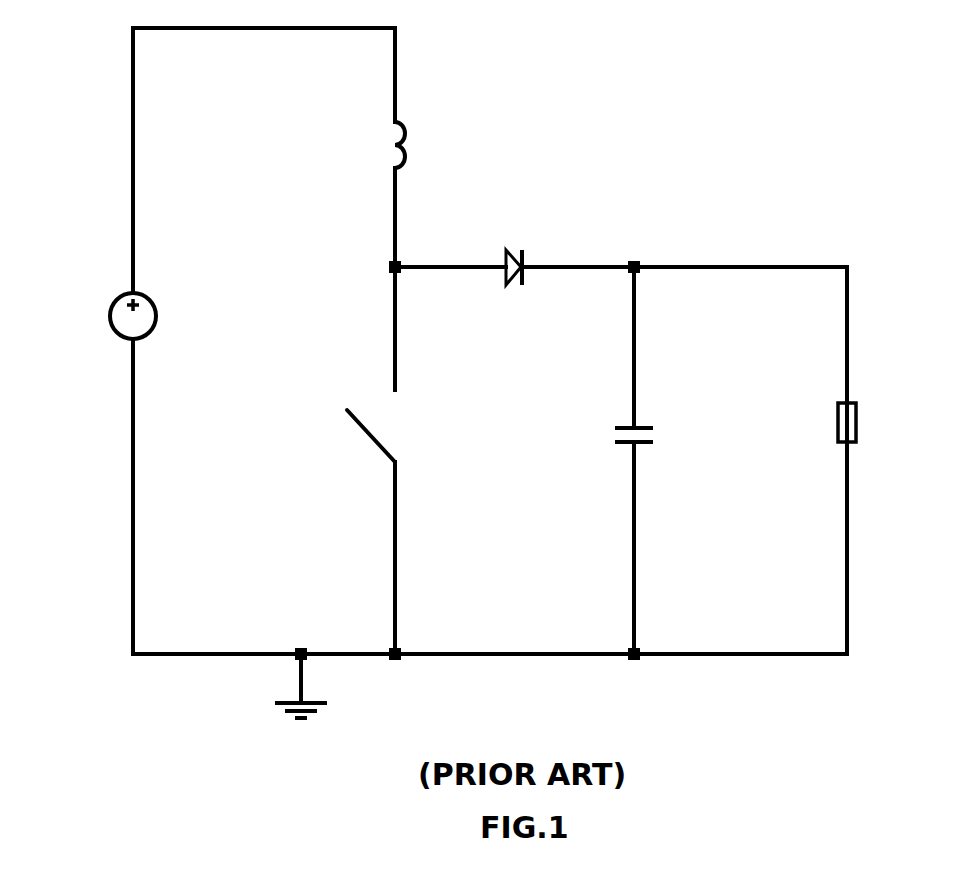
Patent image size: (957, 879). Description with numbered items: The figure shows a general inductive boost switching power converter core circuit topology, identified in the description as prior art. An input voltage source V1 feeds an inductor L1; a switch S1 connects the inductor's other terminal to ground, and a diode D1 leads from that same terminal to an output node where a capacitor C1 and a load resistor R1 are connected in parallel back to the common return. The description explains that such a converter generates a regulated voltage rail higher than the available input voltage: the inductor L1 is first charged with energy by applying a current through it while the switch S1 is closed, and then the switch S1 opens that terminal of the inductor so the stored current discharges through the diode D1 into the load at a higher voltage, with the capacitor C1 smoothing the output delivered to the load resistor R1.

The voltage source V1 is at (157, 309).
The inductor L1 is at (378, 142).
The switch S1 is at (365, 438).
The diode D1 is at (518, 284).
The capacitor C1 is at (613, 437).
The load resistor R1 is at (871, 426).